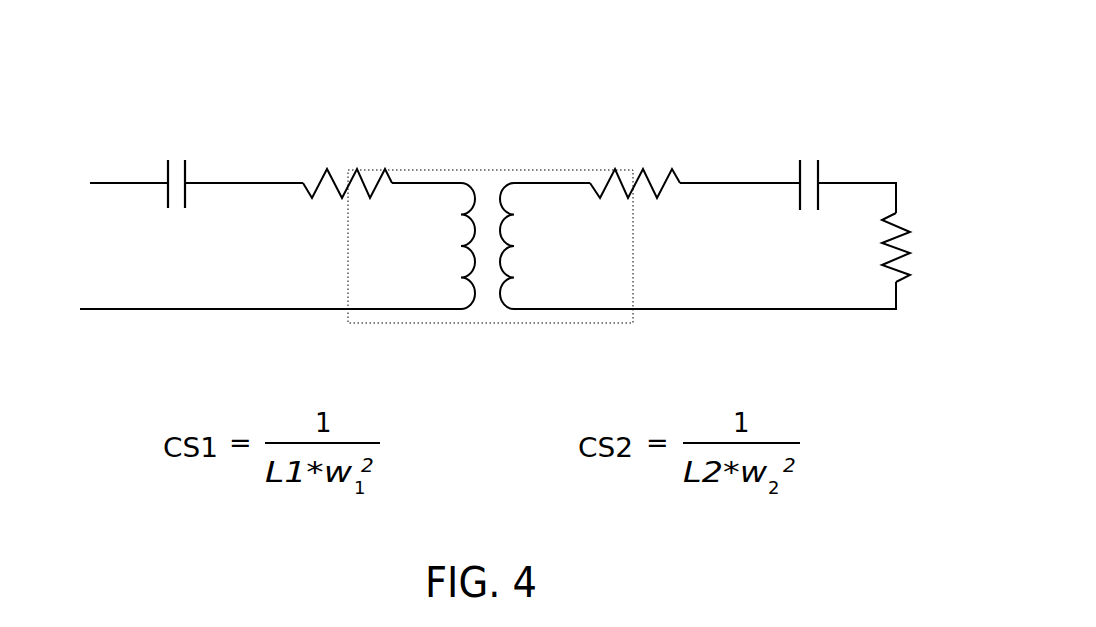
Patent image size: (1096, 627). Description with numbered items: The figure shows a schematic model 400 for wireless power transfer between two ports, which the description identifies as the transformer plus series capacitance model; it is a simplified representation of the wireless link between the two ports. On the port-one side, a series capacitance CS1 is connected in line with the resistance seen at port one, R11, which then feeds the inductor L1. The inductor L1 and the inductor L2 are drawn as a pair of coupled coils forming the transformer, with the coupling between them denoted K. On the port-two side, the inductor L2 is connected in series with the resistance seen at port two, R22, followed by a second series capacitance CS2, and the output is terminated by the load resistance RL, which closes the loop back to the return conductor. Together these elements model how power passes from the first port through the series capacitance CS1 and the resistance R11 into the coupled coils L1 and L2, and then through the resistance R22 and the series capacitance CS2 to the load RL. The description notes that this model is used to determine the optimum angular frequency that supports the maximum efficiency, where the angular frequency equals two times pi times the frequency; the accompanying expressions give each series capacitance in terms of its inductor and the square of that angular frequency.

The schematic model 400 is at (824, 69).
The series capacitance CS1 is at (178, 167).
The resistance seen at Port 1 R11 is at (347, 164).
The coupling coefficient K is at (490, 152).
The inductor L1 is at (433, 246).
The inductor L2 is at (545, 246).
The resistance seen at Port 2 R22 is at (635, 164).
The series capacitance CS2 is at (813, 168).
The load resistance RL is at (925, 247).